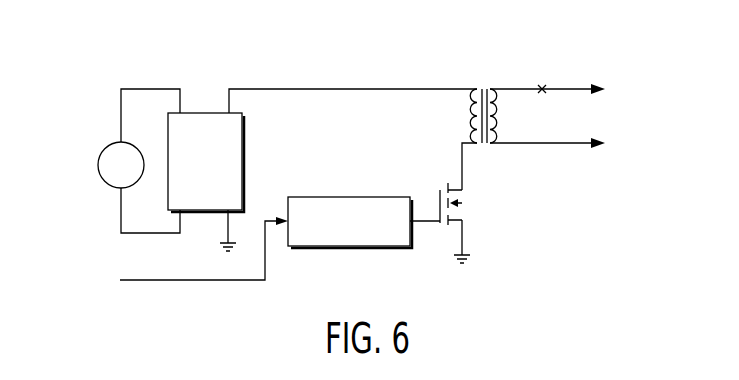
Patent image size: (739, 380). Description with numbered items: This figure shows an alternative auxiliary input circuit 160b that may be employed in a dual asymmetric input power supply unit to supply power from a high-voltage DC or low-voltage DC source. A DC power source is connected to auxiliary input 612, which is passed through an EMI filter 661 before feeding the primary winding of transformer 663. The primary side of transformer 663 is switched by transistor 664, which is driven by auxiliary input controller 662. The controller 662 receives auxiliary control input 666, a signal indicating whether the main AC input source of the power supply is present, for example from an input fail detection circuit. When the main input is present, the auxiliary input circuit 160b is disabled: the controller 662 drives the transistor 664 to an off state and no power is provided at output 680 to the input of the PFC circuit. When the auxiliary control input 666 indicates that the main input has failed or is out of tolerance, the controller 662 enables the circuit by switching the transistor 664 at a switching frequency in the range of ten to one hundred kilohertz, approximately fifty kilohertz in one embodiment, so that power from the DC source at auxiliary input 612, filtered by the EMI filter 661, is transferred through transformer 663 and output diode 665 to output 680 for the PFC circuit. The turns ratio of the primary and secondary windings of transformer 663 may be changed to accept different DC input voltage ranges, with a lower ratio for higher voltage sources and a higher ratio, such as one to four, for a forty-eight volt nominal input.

The auxiliary input circuit 160b is at (330, 58).
The auxiliary input 612 is at (113, 145).
The EMI filter 661 is at (206, 113).
The auxiliary input controller 662 is at (358, 197).
The transformer 663 is at (490, 145).
The transistor 664 is at (442, 193).
The output diode 665 is at (540, 87).
The auxiliary control input 666 is at (145, 282).
The output 680 is at (568, 88).